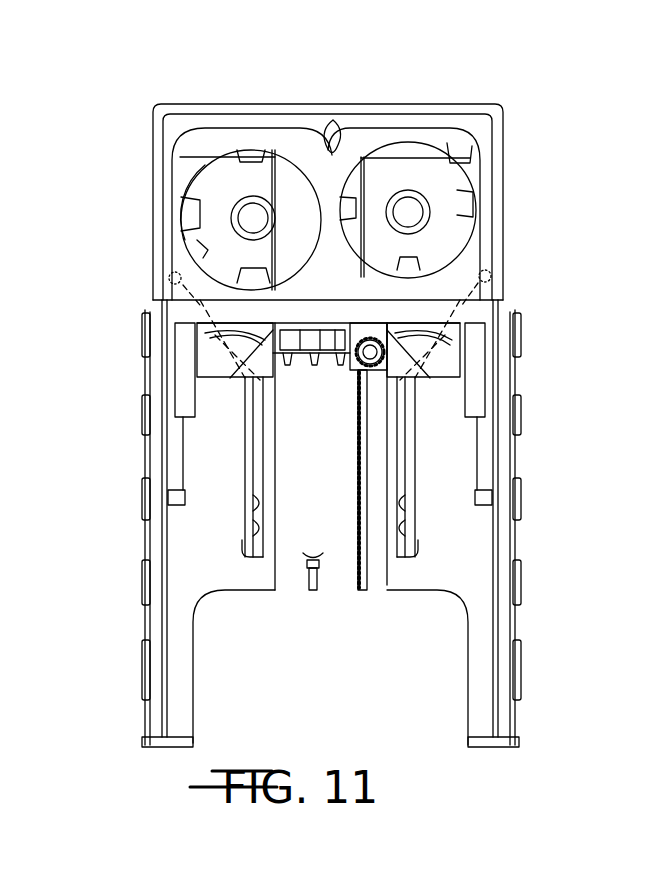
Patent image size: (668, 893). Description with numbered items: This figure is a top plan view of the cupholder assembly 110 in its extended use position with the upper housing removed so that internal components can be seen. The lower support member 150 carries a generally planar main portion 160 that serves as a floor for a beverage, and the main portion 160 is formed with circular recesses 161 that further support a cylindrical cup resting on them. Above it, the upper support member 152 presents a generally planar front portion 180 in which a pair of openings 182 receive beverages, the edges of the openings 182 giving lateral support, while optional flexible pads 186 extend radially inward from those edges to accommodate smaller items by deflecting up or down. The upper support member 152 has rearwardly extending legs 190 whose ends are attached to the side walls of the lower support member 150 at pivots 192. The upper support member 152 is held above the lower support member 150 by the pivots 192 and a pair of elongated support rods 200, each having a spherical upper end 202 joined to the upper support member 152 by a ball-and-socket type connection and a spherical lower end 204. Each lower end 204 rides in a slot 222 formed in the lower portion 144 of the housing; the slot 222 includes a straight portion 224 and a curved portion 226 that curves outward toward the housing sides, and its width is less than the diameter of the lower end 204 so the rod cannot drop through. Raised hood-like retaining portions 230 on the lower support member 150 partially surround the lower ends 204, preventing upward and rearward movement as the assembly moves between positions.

The cupholder assembly 110 is at (527, 188).
The lower portion 144 is at (193, 650).
The lower support member 150 is at (447, 390).
The upper support member 152 is at (329, 596).
The main portion 160 is at (483, 170).
The circular recesses 161 is at (243, 182).
The front portion 180 is at (480, 253).
The openings 182 is at (185, 240).
The flexible pads 186 is at (257, 170).
The legs 190 is at (177, 447).
The pivots 192 is at (173, 503).
The support rods 200 is at (205, 340).
The spherical upper end 202 is at (173, 278).
The spherical lower end 204 is at (215, 383).
The slots 222 is at (258, 498).
The straight portion 224 is at (258, 522).
The curved portion 226 is at (243, 385).
The retaining portions 230 is at (278, 318).